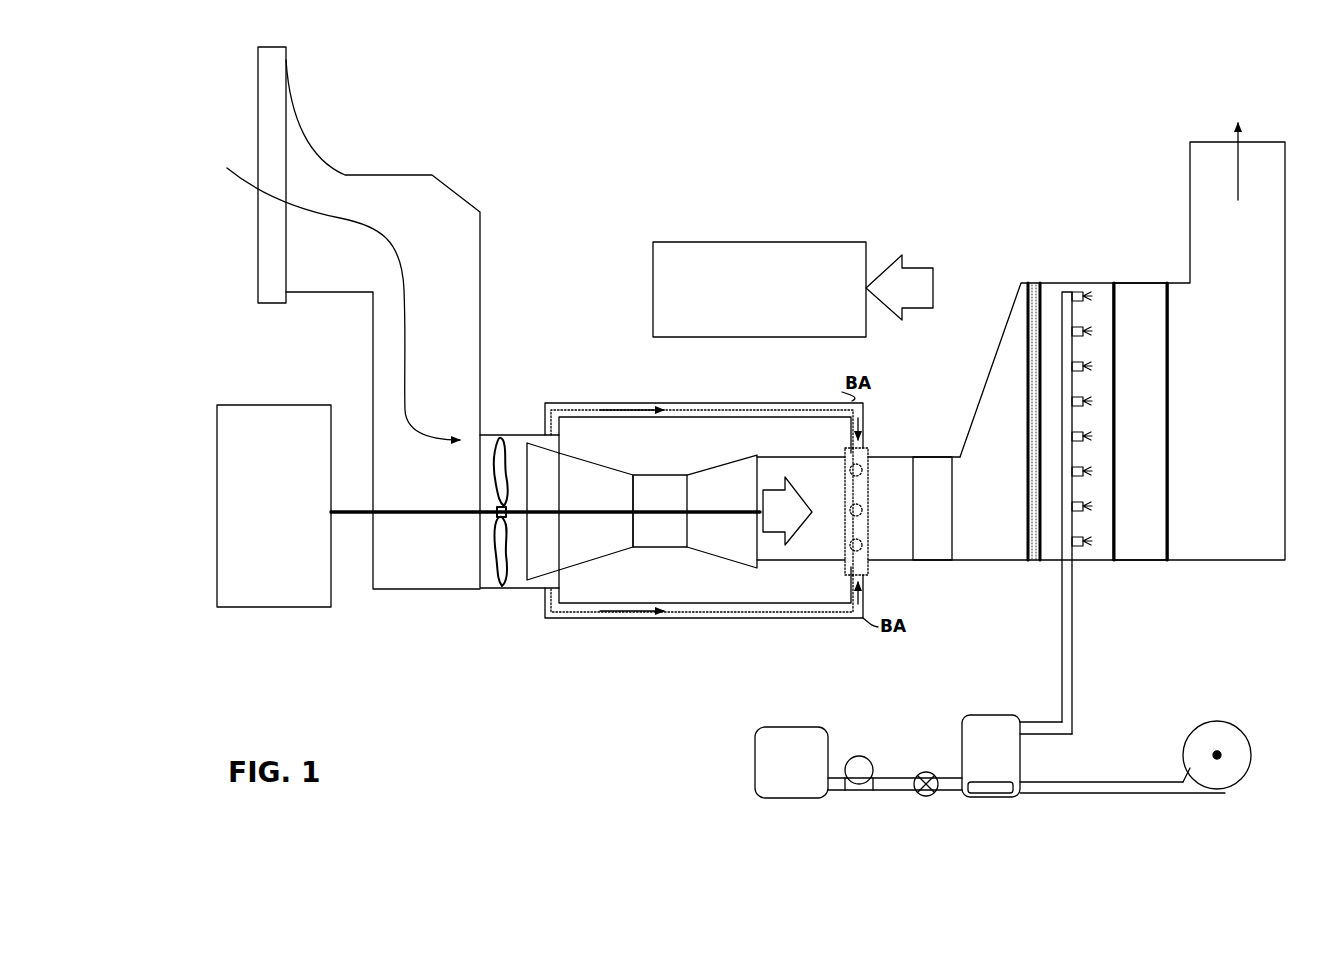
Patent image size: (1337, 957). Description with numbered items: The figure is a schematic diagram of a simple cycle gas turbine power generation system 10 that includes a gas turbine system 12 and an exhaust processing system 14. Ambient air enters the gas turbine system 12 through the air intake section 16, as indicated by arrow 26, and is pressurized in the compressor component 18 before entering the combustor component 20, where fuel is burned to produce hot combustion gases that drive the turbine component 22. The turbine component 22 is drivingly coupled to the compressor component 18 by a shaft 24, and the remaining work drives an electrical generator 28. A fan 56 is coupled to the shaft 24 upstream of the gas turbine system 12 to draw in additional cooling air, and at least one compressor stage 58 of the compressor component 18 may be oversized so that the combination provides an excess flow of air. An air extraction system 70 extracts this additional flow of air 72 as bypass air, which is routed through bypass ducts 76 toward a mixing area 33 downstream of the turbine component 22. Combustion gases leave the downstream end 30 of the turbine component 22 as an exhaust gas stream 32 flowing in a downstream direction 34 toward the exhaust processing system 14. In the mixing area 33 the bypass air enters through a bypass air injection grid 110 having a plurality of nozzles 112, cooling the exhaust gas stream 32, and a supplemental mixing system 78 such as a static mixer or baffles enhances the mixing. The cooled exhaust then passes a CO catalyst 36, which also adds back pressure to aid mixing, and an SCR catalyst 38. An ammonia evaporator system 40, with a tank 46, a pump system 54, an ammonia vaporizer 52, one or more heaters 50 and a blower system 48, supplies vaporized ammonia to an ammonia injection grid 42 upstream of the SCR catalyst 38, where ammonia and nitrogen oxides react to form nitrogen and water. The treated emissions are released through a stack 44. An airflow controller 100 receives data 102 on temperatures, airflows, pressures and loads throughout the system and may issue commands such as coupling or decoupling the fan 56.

The simple cycle gas turbine power generation system 10 is at (645, 158).
The gas turbine system 12 is at (646, 560).
The exhaust processing system 14 is at (1056, 188).
The air intake section 16 is at (365, 353).
The compressor component 18 is at (596, 511).
The combustor component 20 is at (660, 511).
The turbine component 22 is at (722, 511).
The shaft 24 is at (426, 516).
The arrow indicating air entry 26 is at (405, 263).
The electrical generator 28 is at (217, 512).
The downstream end 30 is at (763, 565).
The exhaust gas stream 32 is at (787, 511).
The mixing area 33 is at (826, 482).
The downstream direction 34 is at (945, 581).
The CO catalyst 36 is at (1024, 540).
The SCR catalyst 38 is at (1168, 485).
The ammonia evaporator system 40 is at (912, 846).
The ammonia injection grid 42 is at (1062, 308).
The stack 44 is at (1238, 175).
The tank 46 is at (753, 762).
The blower system 48 is at (1231, 790).
The heater 50 is at (996, 794).
The ammonia vaporizer 52 is at (977, 714).
The pump system 54 is at (851, 756).
The fan 56 is at (494, 533).
The oversized compressor stage 58 is at (543, 511).
The air extraction system 70 is at (561, 441).
The flow of air 72 is at (556, 398).
The bypass ducts 76 is at (614, 401).
The supplemental mixing system 78 is at (932, 508).
The airflow controller 100 is at (759, 289).
The data 102 is at (917, 266).
The bypass air injection grid 110 is at (868, 452).
The nozzles 112 is at (863, 508).